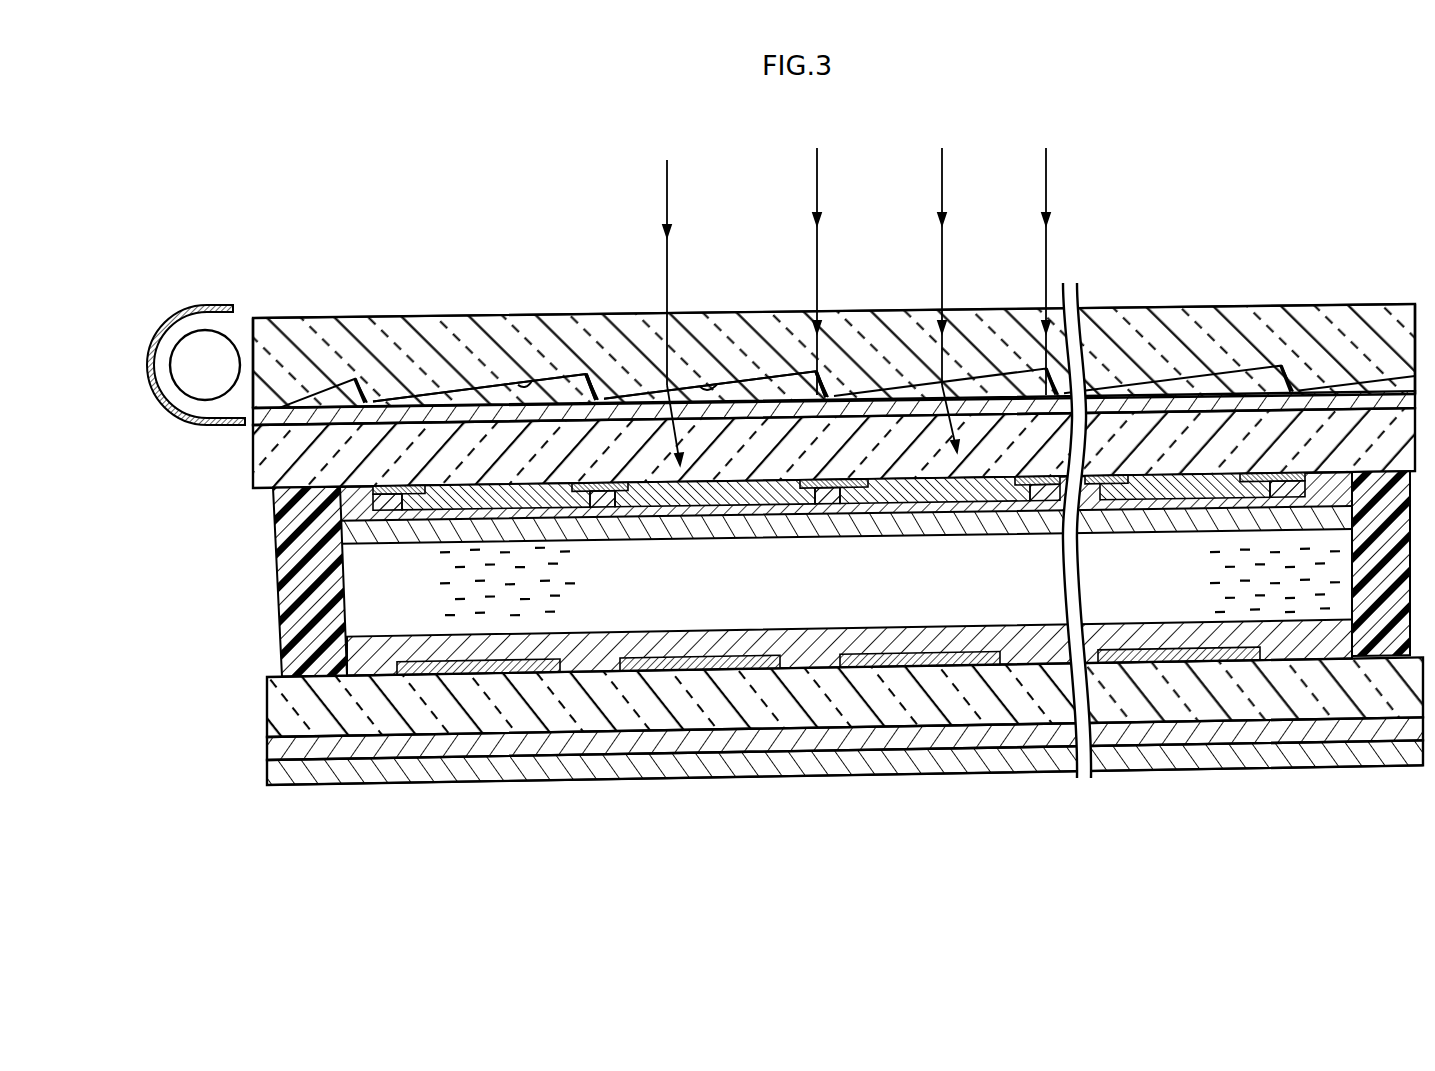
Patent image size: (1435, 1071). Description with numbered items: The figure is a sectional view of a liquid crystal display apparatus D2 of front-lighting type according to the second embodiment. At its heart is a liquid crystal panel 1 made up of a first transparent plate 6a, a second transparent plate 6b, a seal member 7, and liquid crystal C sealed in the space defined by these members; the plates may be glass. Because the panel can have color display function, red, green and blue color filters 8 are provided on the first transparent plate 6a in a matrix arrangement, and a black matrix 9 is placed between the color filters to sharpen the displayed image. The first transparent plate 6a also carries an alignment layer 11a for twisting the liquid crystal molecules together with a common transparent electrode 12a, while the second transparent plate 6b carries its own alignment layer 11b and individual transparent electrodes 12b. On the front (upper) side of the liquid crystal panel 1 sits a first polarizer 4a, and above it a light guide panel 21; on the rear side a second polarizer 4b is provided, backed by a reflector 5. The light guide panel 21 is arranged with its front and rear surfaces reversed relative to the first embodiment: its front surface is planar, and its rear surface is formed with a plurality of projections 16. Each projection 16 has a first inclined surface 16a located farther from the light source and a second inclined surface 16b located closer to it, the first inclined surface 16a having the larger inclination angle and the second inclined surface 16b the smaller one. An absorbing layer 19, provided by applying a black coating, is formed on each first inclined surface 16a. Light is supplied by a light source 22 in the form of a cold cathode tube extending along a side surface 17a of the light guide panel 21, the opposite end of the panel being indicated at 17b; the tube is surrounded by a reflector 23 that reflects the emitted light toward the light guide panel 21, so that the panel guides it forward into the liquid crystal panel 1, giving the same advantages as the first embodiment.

The liquid crystal panel 1 is at (205, 585).
The first polarizer 4a is at (347, 407).
The second polarizer 4b is at (270, 748).
The reflector 5 is at (272, 772).
The first transparent plate 6a is at (285, 460).
The second transparent plate 6b is at (290, 705).
The seal member 7 is at (290, 563).
The color filters 8 is at (518, 498).
The black matrix 9 is at (398, 498).
The alignment layer 11a is at (365, 528).
The alignment layer 11b is at (385, 645).
The common transparent electrode 12a is at (372, 491).
The individual transparent electrodes 12b is at (467, 672).
The projections 16 is at (630, 345).
The first inclined surface 16a is at (603, 380).
The second inclined surface 16b is at (525, 393).
The side surface 17a is at (250, 330).
The opposite end face 17b is at (1415, 330).
The absorbing layer 19 is at (622, 398).
The light guide panel 21 is at (440, 335).
The light source 22 is at (188, 350).
The reflector 23 is at (148, 355).
The liquid crystal C is at (375, 620).
The liquid crystal display apparatus D2 is at (1316, 195).